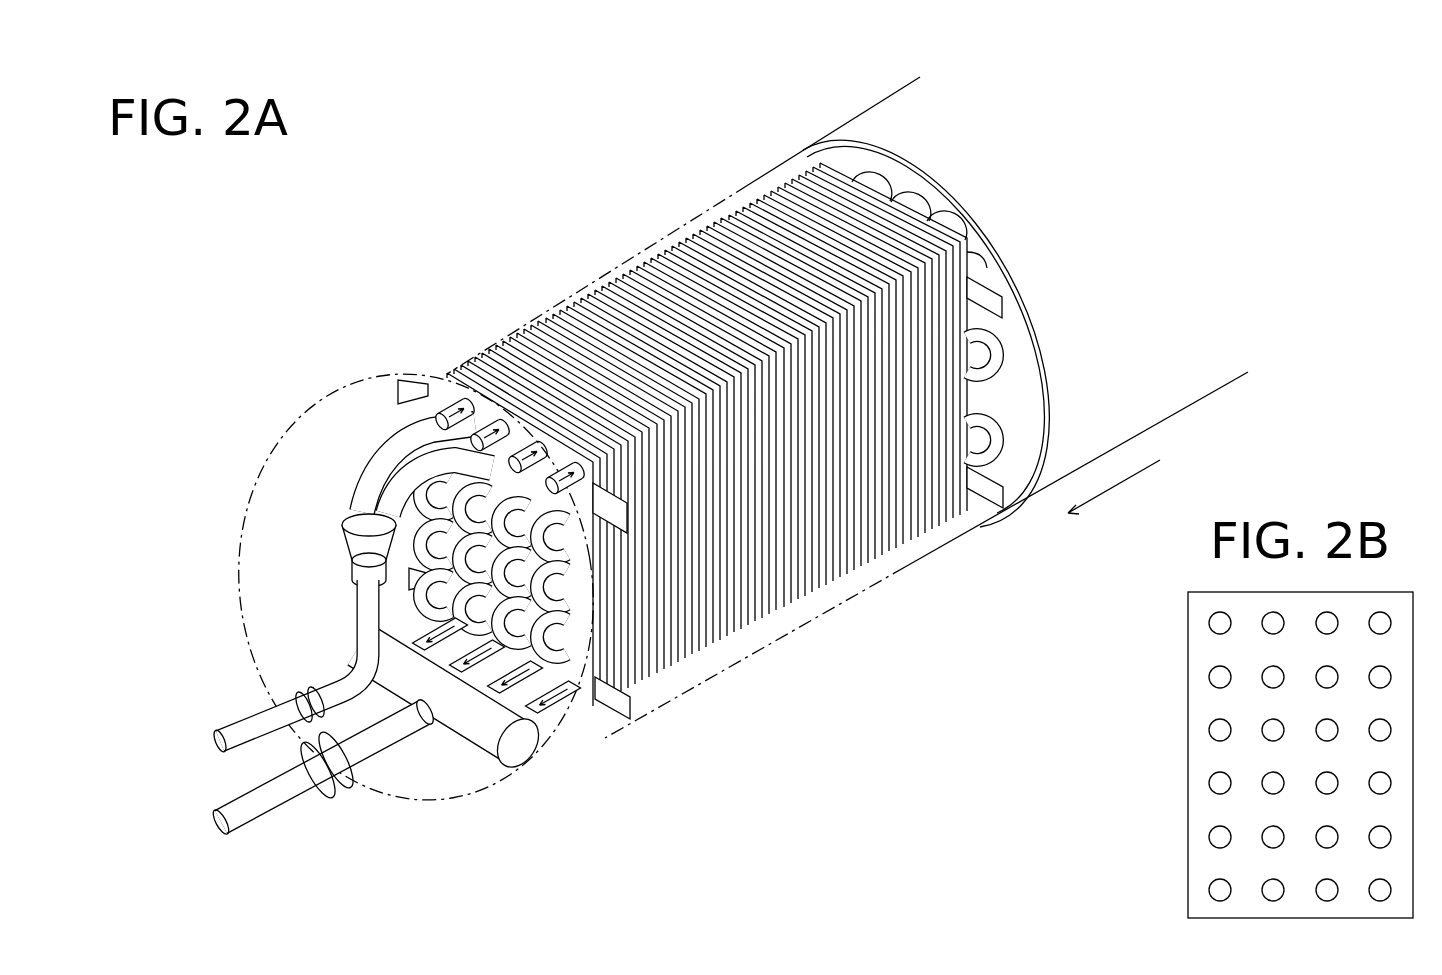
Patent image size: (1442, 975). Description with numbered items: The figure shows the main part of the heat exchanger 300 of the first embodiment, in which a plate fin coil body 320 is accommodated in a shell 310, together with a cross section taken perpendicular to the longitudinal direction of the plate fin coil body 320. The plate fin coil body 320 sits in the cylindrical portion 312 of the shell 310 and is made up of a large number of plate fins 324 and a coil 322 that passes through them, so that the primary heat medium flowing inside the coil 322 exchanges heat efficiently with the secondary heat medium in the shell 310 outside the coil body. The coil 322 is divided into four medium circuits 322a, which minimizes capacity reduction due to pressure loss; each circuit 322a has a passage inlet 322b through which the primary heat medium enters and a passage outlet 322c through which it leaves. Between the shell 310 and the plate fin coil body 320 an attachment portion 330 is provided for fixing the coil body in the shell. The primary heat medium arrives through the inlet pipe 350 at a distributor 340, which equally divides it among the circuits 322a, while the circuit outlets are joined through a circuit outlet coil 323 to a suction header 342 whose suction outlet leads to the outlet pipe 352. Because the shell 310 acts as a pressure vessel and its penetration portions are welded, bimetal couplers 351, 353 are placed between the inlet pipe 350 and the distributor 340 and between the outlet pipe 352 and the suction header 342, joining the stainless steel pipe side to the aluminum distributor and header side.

In FIG. 2A, the heat exchanger 300 is at (712, 498).
In FIG. 2A, the shell 310 is at (1092, 183).
In FIG. 2A, the cylindrical portion 312 is at (1215, 410).
In FIG. 2A, the plate fin coil body 320 is at (654, 504).
In FIG. 2A, the coil 322 is at (410, 585).
In FIG. 2B, the coil 322 is at (1213, 632).
In FIG. 2A, the medium circuit 322a is at (480, 430).
In FIG. 2A, the passage inlet 322b is at (405, 428).
In FIG. 2A, the passage outlet 322c is at (493, 657).
In FIG. 2A, the circuit outlet coil 323 is at (553, 720).
In FIG. 2A, the plate fin 324 is at (513, 328).
In FIG. 2B, the plate fin 324 is at (1197, 733).
In FIG. 2A, the attachment portion 330 is at (405, 392).
In FIG. 2A, the distributor 340 is at (345, 540).
In FIG. 2A, the suction header 342 is at (470, 769).
In FIG. 2A, the inlet pipe 350 is at (269, 666).
In FIG. 2A, the bimetal coupler 351 is at (296, 690).
In FIG. 2A, the outlet pipe 352 is at (302, 767).
In FIG. 2A, the bimetal coupler 353 is at (340, 795).